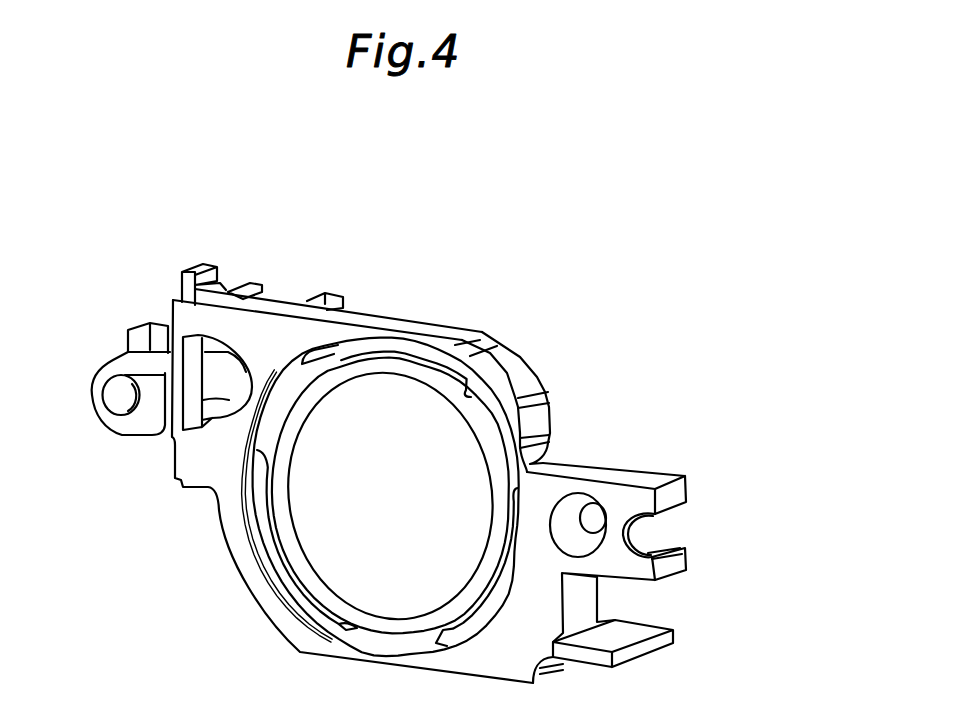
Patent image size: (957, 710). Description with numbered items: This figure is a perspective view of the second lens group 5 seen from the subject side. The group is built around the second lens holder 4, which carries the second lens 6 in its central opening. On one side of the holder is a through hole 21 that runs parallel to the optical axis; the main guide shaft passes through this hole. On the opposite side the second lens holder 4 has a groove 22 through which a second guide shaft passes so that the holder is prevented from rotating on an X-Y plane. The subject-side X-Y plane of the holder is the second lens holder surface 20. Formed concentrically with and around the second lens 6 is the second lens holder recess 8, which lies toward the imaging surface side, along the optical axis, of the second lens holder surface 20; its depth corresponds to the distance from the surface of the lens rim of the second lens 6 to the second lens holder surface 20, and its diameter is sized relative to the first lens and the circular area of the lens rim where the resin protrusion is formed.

The second lens holder 4 is at (296, 282).
The second lens group 5 is at (197, 238).
The second lens 6 is at (387, 407).
The second lens holder recess 8 is at (347, 350).
The second lens holder surface 20 is at (473, 372).
The through hole 21 is at (119, 402).
The groove 22 is at (653, 527).